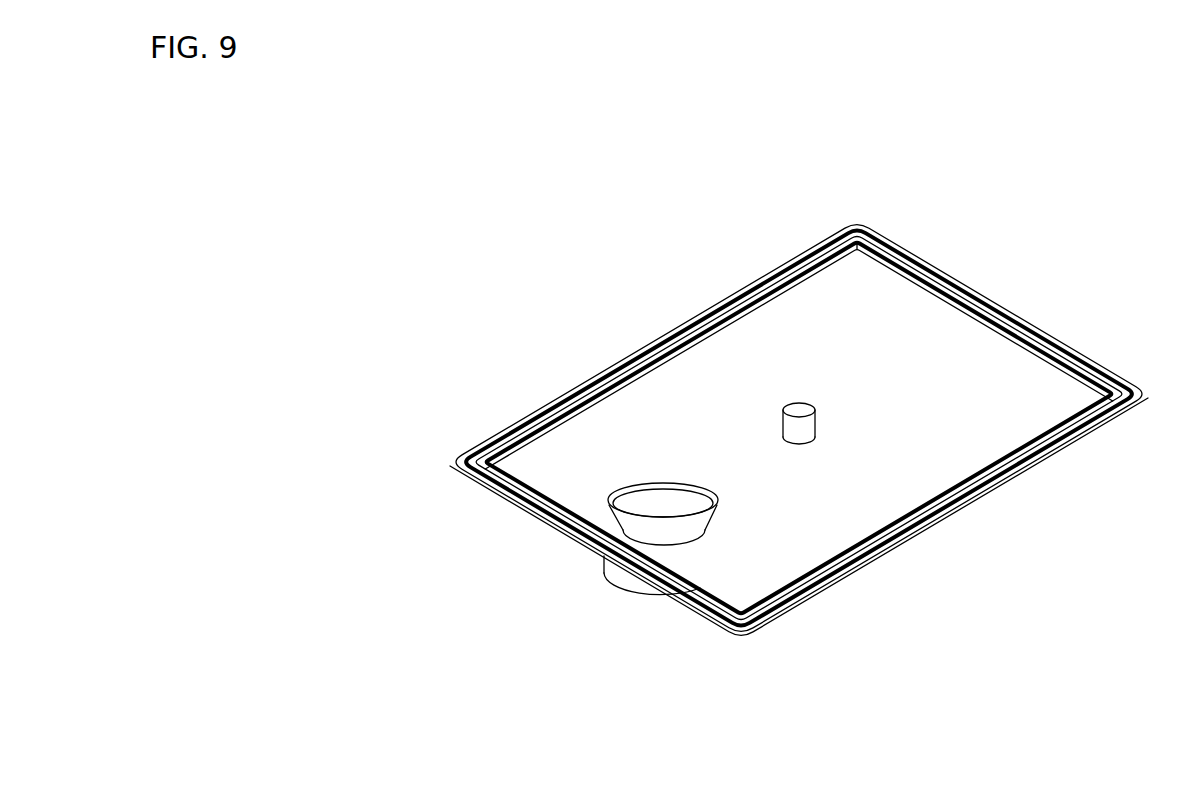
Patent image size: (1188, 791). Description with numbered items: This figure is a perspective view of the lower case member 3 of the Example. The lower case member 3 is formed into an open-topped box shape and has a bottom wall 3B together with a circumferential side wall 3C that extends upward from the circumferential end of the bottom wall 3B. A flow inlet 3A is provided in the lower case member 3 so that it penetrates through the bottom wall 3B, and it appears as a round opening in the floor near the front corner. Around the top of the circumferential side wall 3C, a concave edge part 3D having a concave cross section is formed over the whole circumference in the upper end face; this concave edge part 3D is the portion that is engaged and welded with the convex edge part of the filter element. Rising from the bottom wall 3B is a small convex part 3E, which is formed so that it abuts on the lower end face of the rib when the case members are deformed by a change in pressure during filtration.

The lower case member 3 is at (814, 459).
The flow inlet 3A is at (653, 608).
The bottom wall 3B is at (551, 479).
The circumferential side wall 3C is at (997, 291).
The concave edge part 3D is at (1074, 352).
The convex part 3E is at (792, 428).